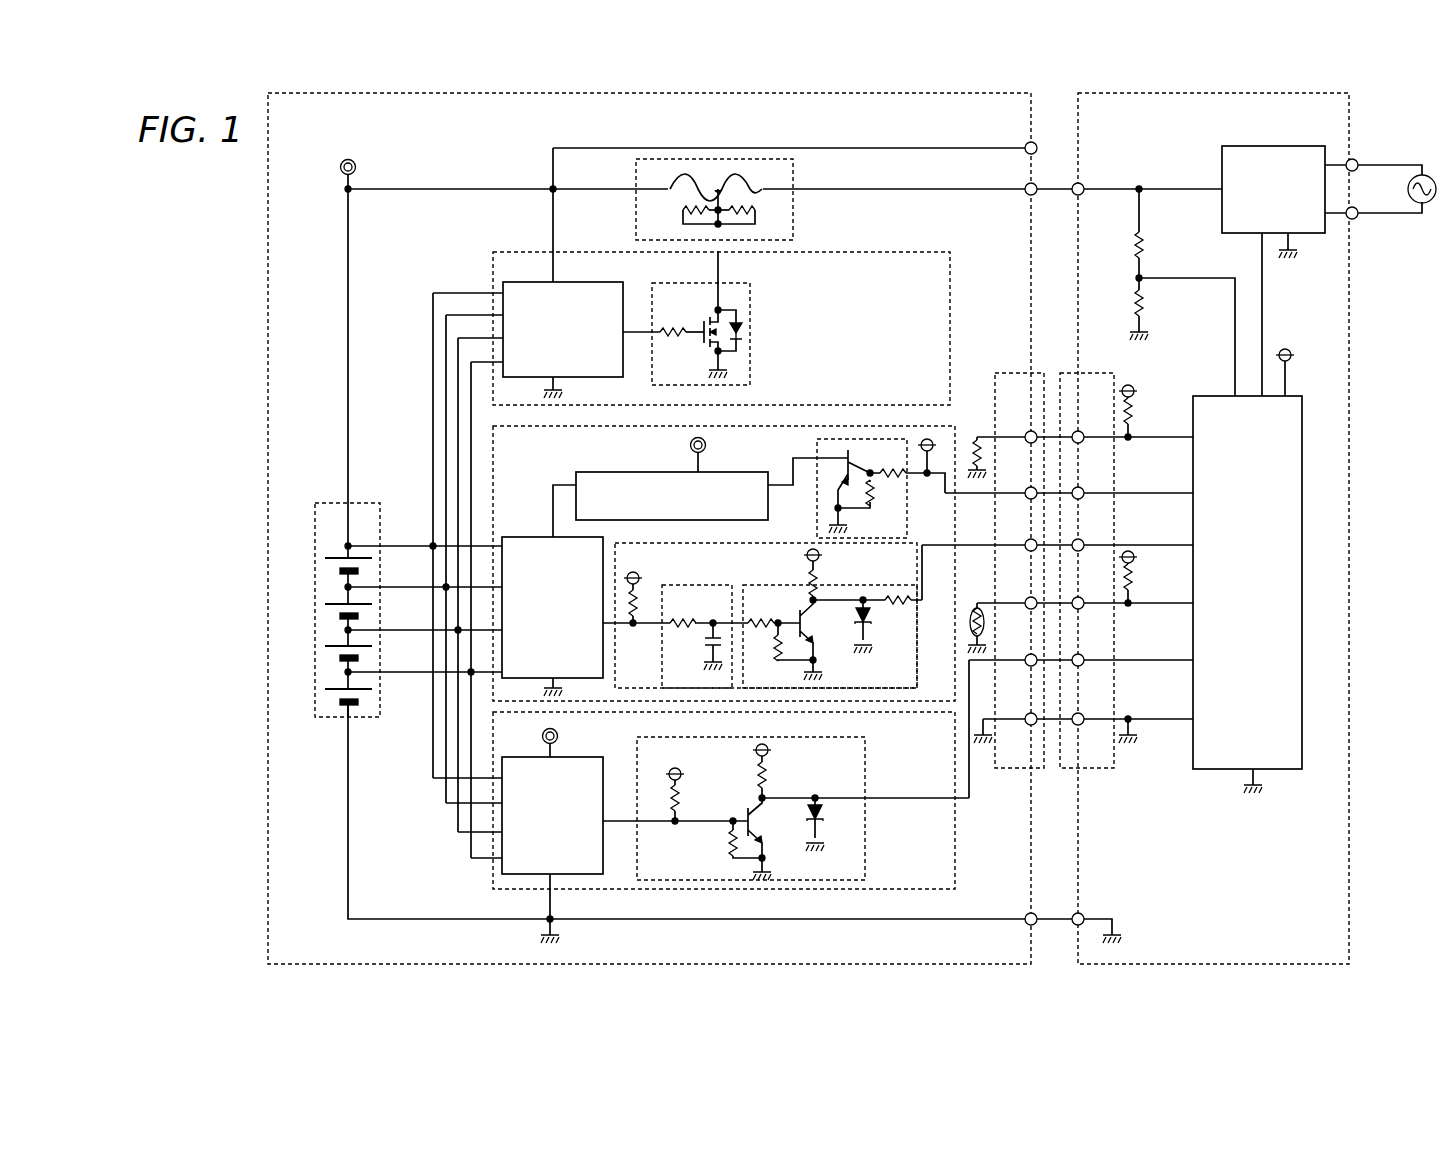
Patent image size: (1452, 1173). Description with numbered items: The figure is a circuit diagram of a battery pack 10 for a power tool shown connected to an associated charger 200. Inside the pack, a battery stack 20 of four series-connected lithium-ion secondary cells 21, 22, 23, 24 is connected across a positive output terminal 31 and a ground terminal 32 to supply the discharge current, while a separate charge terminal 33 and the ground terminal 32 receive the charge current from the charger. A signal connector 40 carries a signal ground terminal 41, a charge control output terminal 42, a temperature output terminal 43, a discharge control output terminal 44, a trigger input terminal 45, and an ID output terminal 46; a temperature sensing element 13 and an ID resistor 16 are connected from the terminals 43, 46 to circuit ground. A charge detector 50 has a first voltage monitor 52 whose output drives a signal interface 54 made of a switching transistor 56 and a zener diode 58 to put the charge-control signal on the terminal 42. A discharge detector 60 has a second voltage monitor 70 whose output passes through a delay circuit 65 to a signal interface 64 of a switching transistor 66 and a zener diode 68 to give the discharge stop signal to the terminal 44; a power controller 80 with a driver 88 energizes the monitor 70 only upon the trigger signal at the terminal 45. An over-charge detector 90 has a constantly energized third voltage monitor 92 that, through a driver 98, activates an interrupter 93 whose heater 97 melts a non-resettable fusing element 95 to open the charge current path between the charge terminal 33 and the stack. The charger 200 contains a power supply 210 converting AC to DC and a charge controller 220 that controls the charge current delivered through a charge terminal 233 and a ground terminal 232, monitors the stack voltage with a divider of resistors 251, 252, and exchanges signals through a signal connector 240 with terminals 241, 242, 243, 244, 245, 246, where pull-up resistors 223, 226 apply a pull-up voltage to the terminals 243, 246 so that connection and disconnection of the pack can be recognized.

The battery pack 10 is at (649, 528).
The temperature sensing element 13 is at (972, 614).
The ID resistor 16 is at (972, 444).
The battery stack 20 is at (329, 618).
The secondary cell 21 is at (312, 710).
The secondary cell 22 is at (312, 664).
The secondary cell 23 is at (312, 622).
The secondary cell 24 is at (312, 580).
The positive output terminal 31 is at (1018, 135).
The ground terminal 32 is at (1017, 905).
The charge terminal 33 is at (1018, 202).
The signal connector 40 is at (1019, 570).
The signal ground terminal 41 is at (1019, 731).
The charge control output terminal 42 is at (1019, 671).
The temperature output terminal 43 is at (1019, 615).
The discharge control output terminal 44 is at (1019, 556).
The trigger input terminal 45 is at (1020, 505).
The ID output terminal 46 is at (1019, 447).
The charge detector 50 is at (731, 827).
The first voltage monitor 52 is at (552, 850).
The signal interface 54 is at (786, 808).
The switching transistor 56 is at (745, 810).
The zener diode 58 is at (826, 828).
The discharge detector 60 is at (724, 563).
The signal interface 64 is at (768, 615).
The delay circuit 65 is at (697, 636).
The switching transistor 66 is at (798, 612).
The zener diode 68 is at (872, 630).
The second voltage monitor 70 is at (552, 616).
The power controller 80 is at (672, 496).
The driver 88 is at (856, 488).
The over-charge detector 90 is at (721, 328).
The third voltage monitor 92 is at (563, 340).
The interrupter 93 is at (714, 199).
The non-resettable element 95 is at (740, 178).
The heater 97 is at (745, 216).
The driver 98 is at (686, 318).
The charger 200 is at (1213, 528).
The power supply 210 is at (1290, 202).
The charge controller 220 is at (1247, 594).
The pull-up resistor 223 is at (1134, 582).
The pull-up resistor 226 is at (1134, 416).
The ground terminal 232 is at (1100, 905).
The charge terminal 233 is at (1098, 202).
The signal connector 240 is at (1088, 570).
The terminal 241 is at (1094, 731).
The terminal 242 is at (1094, 671).
The terminal 243 is at (1094, 615).
The terminal 244 is at (1094, 556).
The terminal 245 is at (1094, 505).
The terminal 246 is at (1094, 447).
The resistor 251 is at (1160, 248).
The resistor 252 is at (1160, 307).